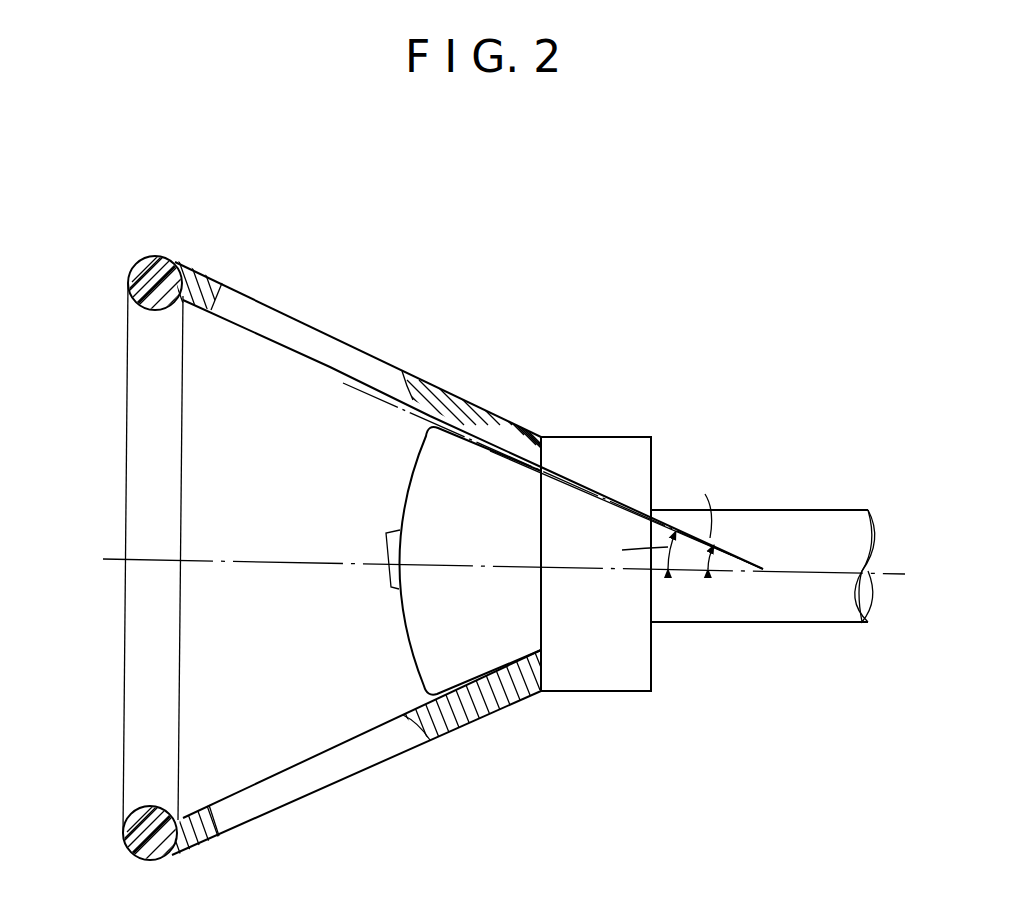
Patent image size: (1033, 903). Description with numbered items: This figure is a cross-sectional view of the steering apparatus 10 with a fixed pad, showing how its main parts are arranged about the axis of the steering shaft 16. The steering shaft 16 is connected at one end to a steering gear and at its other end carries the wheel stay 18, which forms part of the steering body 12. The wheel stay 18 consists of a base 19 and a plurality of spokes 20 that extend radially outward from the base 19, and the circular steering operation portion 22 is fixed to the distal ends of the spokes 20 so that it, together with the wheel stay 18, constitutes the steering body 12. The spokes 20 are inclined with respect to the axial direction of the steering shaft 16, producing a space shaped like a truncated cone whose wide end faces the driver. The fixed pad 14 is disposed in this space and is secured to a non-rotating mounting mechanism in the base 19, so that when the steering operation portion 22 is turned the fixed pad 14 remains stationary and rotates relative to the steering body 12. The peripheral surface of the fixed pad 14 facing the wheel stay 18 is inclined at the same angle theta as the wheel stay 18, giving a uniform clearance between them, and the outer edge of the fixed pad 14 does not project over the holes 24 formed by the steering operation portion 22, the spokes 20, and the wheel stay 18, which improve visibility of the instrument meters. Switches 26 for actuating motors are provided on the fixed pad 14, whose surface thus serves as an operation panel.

The steering apparatus 10 is at (110, 236).
The steering body 12 is at (153, 253).
The fixed pad 14 is at (400, 463).
The steering shaft 16 is at (782, 508).
The wheel stay 18 is at (530, 428).
The base 19 is at (600, 446).
The spokes 20 is at (207, 274).
The steering operation portion 22 is at (132, 364).
The holes 24 is at (406, 376).
The switches 26 is at (385, 535).